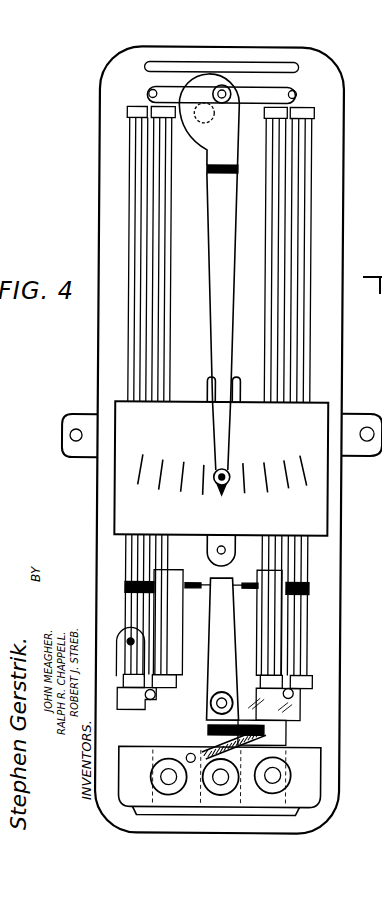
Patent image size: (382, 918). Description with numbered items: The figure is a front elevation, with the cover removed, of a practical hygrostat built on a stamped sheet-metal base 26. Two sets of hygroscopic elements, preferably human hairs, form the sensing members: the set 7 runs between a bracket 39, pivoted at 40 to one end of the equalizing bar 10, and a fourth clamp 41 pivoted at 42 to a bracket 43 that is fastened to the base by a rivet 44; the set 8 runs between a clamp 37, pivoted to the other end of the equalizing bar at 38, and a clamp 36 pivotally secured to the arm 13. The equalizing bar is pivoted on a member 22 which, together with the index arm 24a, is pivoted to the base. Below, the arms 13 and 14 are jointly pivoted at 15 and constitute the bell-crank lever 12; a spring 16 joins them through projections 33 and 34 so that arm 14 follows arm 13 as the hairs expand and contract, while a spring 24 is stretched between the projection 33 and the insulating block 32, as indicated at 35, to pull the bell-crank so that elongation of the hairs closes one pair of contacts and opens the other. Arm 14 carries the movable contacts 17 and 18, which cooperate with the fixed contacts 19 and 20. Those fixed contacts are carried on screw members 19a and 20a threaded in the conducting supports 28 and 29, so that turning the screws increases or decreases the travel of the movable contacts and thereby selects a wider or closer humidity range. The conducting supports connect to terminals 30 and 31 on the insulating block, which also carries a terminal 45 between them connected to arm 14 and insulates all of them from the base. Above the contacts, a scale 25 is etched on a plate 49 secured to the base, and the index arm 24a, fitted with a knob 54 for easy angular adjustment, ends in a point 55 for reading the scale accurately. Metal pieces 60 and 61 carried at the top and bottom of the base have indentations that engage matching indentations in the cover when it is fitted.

The metal piece 60 is at (257, 60).
The equalizing bar 10 is at (247, 100).
The pivot 40 is at (147, 93).
The pivot 38 is at (290, 93).
The bracket 39 is at (125, 111).
The clamp 37 is at (312, 111).
The index arm 24a is at (212, 315).
The member 22 is at (226, 167).
The base 26 is at (323, 198).
The set of hygroscopic elements 7 is at (157, 220).
The set of hygroscopic elements 8 is at (287, 292).
The plate 49 is at (317, 406).
The knob 54 is at (215, 472).
The scale 25 is at (265, 476).
The point 55 is at (228, 495).
The fixed contact 19 is at (197, 576).
The movable contact 17 is at (207, 583).
The movable contact 18 is at (239, 582).
The screw member 19a is at (157, 577).
The screw member 20a is at (309, 581).
The conducting support 28 is at (180, 612).
The fixed contact 20 is at (247, 590).
The arm 14 is at (214, 635).
The conducting support 29 is at (258, 643).
The pivot 15 is at (212, 700).
The bell-crank lever 12 is at (247, 700).
The rivet 44 is at (128, 633).
The pivot 42 is at (159, 698).
The clamp 36 is at (304, 681).
The spring 16 is at (256, 705).
The clamp 41 is at (127, 684).
The bracket 43 is at (119, 700).
The arm 13 is at (290, 710).
The projection 33 is at (290, 724).
The projection 34 is at (208, 735).
The spring 24 is at (238, 750).
The spring anchorage 35 is at (190, 756).
The insulating block 32 is at (312, 788).
The metal piece 61 is at (312, 813).
The terminal 30 is at (170, 770).
The terminal 45 is at (221, 782).
The terminal 31 is at (284, 765).